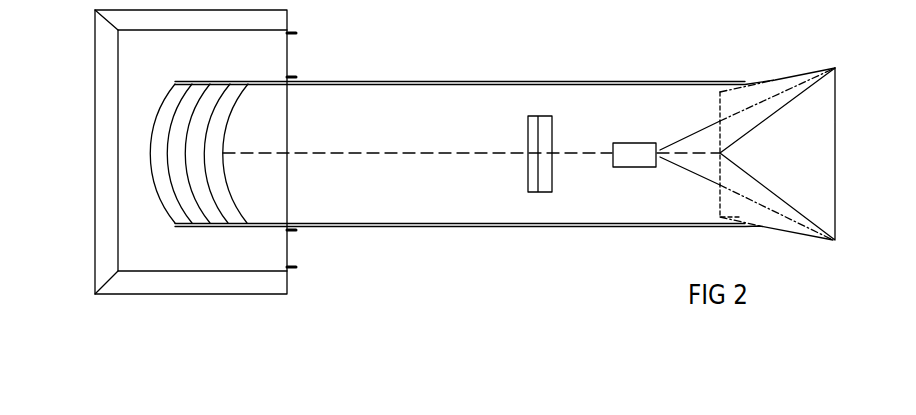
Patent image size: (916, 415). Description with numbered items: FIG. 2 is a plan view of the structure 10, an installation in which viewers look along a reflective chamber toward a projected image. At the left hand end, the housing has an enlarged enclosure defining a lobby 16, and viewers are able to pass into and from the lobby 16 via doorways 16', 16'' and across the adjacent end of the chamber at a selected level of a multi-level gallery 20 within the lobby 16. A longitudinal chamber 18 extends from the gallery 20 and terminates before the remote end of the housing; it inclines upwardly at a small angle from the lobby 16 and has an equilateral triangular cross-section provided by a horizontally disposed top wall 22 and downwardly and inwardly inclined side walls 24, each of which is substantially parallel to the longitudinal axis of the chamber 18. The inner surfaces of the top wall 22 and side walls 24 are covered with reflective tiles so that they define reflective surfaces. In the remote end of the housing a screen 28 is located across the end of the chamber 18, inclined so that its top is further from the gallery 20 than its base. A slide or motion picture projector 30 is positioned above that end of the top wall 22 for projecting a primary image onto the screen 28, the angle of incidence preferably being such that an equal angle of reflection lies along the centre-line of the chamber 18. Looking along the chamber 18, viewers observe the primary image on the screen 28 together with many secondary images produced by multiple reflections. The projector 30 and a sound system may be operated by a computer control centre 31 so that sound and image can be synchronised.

The structure 10 is at (560, 68).
The lobby 16 is at (191, 170).
The doorway 16' is at (322, 255).
The doorway 16'' is at (331, 47).
The longitudinal chamber 18 is at (406, 186).
The multi-level gallery 20 is at (200, 112).
The top wall 22 is at (381, 135).
The side walls 24 is at (622, 80).
The screen 28 is at (814, 120).
The projector 30 is at (628, 143).
The computer control centre 31 is at (537, 131).